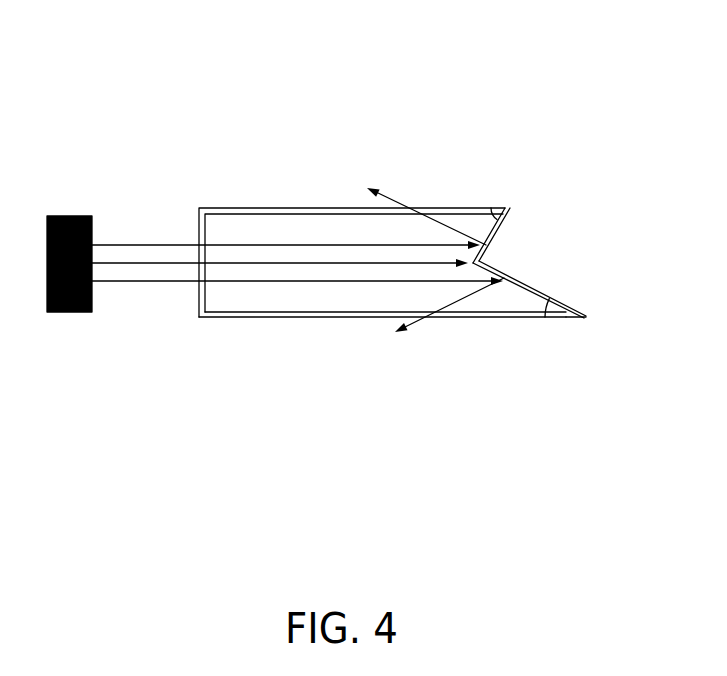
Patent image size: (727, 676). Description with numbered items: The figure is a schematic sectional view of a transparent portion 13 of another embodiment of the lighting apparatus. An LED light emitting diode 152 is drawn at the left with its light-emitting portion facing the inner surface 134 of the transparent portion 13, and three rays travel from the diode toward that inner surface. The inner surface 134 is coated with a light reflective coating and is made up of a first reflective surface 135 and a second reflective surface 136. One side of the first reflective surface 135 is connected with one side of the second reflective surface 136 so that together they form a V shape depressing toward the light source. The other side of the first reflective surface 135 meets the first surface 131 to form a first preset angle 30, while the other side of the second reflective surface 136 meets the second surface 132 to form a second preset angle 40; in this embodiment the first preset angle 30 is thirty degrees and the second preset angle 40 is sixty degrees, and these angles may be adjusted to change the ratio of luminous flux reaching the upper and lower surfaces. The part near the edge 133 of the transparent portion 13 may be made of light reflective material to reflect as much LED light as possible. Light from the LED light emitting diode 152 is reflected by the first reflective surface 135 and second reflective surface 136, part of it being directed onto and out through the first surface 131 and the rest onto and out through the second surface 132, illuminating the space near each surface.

The light guide assembly 13 is at (162, 85).
The LED light emitting diode 152 is at (73, 215).
The second surface 132 is at (437, 212).
The first surface 131 is at (477, 315).
The second preset angle 40 is at (507, 208).
The second reflective surface 136 is at (500, 230).
The inner surface 134 is at (497, 270).
The edge 133 is at (541, 280).
The first reflective surface 135 is at (555, 302).
The first preset angle 30 is at (583, 320).